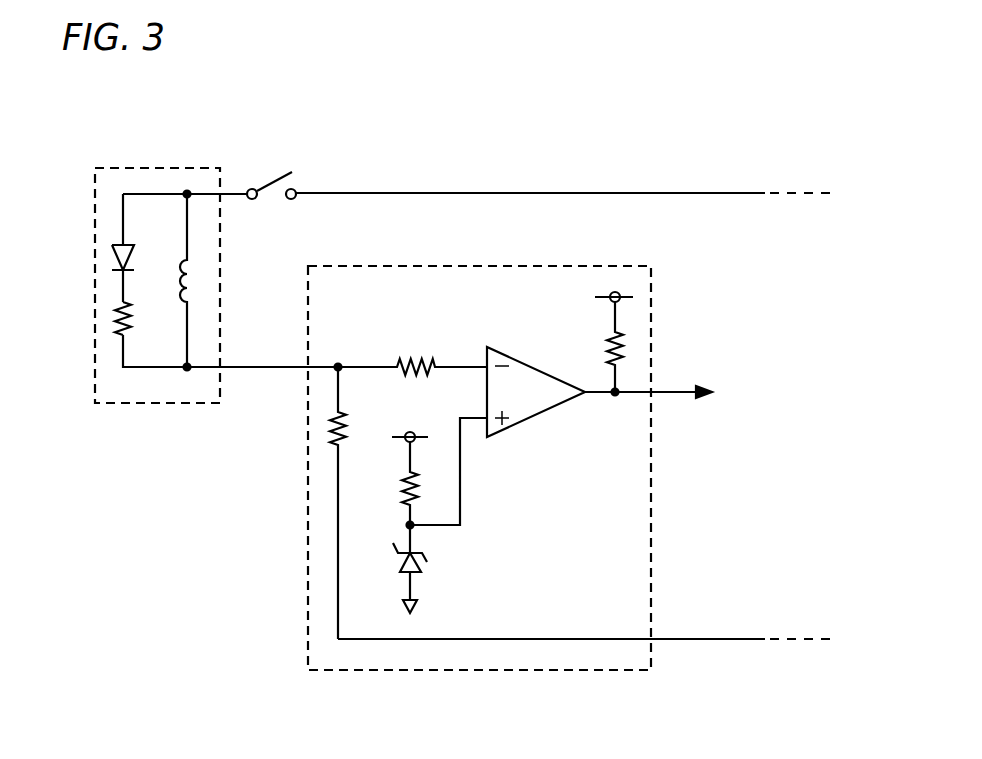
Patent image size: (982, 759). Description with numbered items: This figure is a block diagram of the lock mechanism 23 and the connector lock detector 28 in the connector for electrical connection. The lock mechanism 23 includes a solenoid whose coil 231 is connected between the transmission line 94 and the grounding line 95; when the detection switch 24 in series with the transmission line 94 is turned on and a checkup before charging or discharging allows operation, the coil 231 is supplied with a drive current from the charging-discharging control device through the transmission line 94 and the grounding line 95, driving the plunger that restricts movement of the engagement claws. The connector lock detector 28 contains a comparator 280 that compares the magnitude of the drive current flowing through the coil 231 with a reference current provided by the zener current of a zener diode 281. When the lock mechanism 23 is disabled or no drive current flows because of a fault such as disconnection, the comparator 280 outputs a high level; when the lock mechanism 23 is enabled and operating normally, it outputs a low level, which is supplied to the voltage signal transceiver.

The lock mechanism 23 is at (153, 168).
The detection switch 24 is at (275, 173).
The coil 231 is at (197, 282).
The transmission line 94 is at (690, 191).
The connector lock detector 28 is at (531, 453).
The comparator 280 is at (527, 408).
The zener diode 281 is at (428, 565).
The grounding line 95 is at (707, 636).